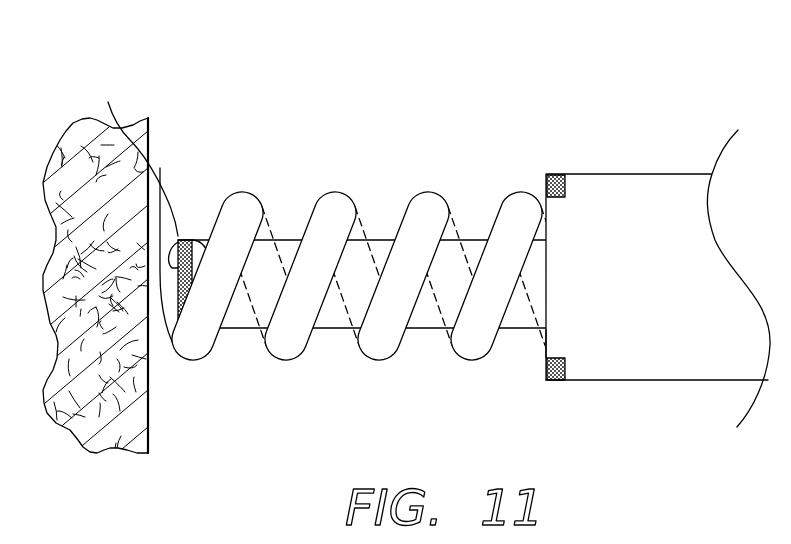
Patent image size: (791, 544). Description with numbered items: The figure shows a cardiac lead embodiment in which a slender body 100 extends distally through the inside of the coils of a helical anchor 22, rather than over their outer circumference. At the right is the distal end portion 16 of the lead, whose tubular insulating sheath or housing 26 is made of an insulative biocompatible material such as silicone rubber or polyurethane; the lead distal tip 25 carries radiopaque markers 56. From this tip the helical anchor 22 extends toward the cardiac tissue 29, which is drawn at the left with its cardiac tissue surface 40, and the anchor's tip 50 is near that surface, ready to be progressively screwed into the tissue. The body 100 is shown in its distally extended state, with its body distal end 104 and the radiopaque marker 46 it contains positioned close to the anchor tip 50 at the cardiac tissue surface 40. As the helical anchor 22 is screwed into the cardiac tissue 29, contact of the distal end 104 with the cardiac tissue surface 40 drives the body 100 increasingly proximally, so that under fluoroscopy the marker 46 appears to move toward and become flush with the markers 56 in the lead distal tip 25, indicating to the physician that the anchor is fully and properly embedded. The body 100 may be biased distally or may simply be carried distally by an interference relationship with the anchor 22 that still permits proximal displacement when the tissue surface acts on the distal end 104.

The cardiac tissue 29 is at (73, 147).
The cardiac tissue surface 40 is at (149, 118).
The helical anchor tip 50 is at (135, 156).
The body distal end 104 is at (177, 234).
The radiopaque marker 46 is at (207, 236).
The helical anchor 22 is at (335, 191).
The body 100 is at (472, 239).
The distal end portion 16 is at (656, 128).
The lead distal tip 25 is at (546, 343).
The radiopaque markers 56 is at (555, 381).
The tubular insulating sheath or housing 26 is at (655, 381).